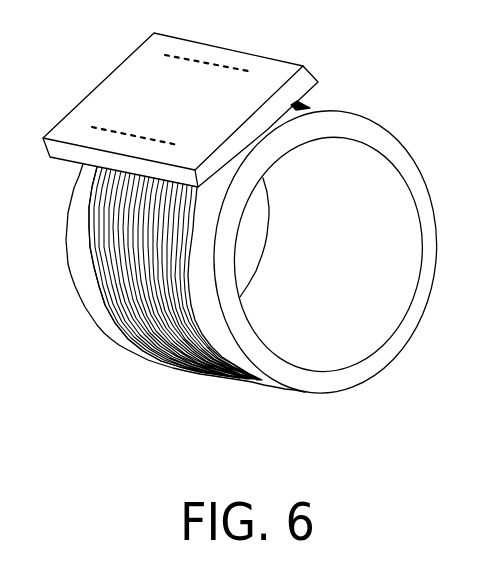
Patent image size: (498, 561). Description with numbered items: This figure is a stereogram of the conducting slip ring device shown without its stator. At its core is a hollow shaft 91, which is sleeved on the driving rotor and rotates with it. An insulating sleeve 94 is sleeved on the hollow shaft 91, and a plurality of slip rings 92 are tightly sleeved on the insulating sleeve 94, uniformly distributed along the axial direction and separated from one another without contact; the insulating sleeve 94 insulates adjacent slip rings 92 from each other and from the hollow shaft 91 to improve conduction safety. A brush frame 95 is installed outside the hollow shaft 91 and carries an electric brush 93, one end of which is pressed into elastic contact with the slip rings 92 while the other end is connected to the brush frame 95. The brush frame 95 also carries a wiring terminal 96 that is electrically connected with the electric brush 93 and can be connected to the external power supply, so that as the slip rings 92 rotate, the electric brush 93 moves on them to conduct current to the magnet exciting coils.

The hollow shaft 91 is at (334, 228).
The slip rings 92 is at (161, 278).
The electric brush 93 is at (137, 273).
The insulating sleeve 94 is at (142, 273).
The brush frame 95 is at (205, 103).
The wiring terminal 96 is at (142, 82).